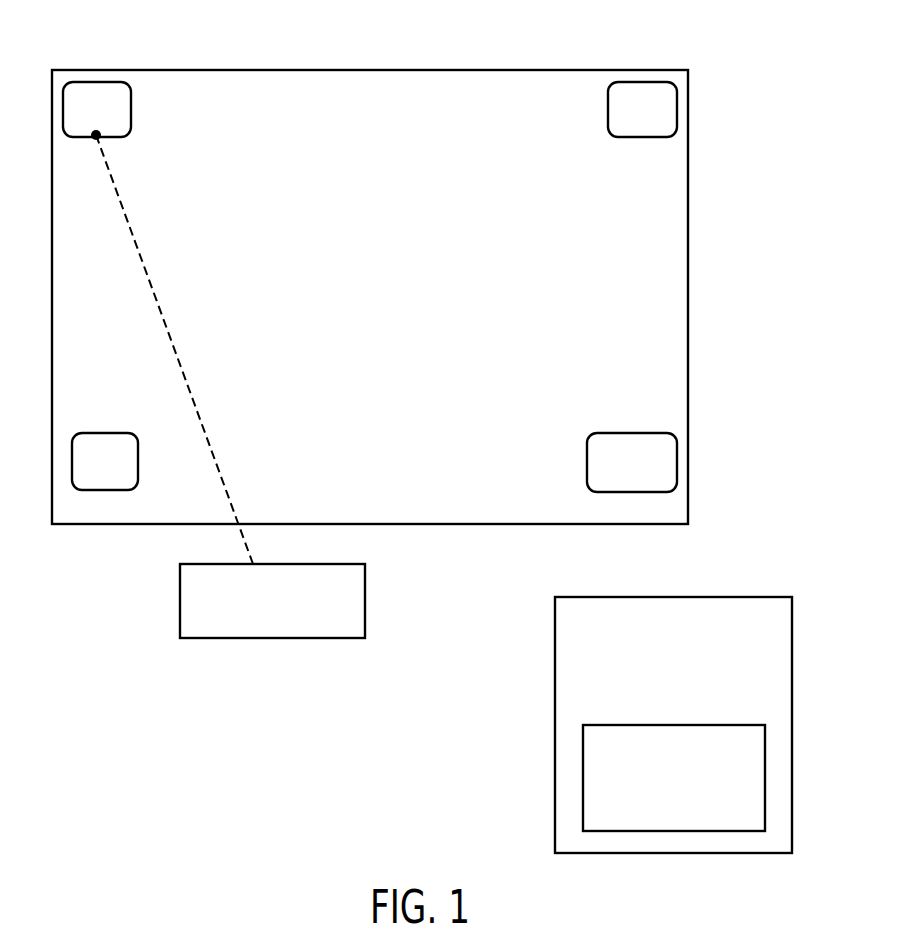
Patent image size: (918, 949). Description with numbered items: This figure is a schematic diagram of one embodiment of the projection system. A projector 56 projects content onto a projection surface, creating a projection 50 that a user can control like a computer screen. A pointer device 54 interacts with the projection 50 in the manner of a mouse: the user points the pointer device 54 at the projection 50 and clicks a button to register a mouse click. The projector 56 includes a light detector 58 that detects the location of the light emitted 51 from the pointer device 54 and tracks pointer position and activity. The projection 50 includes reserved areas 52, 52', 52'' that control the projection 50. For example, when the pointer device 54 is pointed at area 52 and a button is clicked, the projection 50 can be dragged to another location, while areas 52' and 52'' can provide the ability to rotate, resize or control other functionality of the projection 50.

The projection 50 is at (500, 70).
The light emitted 51 is at (130, 233).
The reserved area 52 is at (100, 286).
The reserved area 52' is at (642, 109).
The reserved area 52'' is at (632, 462).
The pointer device 54 is at (313, 638).
The projector 56 is at (732, 597).
The light detector 58 is at (692, 831).